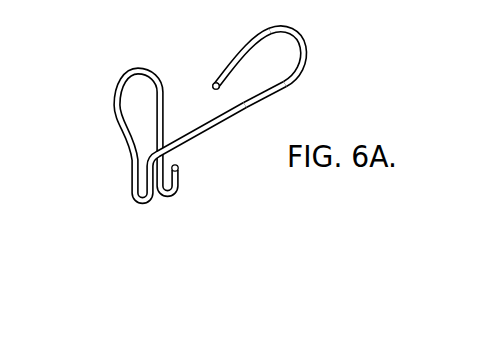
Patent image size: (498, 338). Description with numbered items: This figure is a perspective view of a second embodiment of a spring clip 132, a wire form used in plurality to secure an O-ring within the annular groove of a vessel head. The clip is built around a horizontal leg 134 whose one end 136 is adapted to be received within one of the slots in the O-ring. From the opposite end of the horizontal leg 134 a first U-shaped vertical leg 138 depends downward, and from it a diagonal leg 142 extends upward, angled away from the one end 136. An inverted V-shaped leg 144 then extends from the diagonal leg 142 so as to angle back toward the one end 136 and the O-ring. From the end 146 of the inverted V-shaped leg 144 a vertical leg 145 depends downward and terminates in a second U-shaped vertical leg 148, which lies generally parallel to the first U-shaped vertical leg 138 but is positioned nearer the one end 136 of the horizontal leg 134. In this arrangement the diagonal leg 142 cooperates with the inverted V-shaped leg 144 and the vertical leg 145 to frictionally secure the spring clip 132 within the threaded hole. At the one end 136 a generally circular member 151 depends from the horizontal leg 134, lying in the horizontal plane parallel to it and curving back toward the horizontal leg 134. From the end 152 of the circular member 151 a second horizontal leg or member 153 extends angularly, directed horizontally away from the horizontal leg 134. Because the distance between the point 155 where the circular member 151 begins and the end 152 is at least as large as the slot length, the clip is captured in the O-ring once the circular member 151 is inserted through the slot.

The spring clip 132 is at (210, 109).
The horizontal leg 134 is at (204, 137).
The one end of the horizontal leg 136 is at (263, 50).
The first U-shaped vertical leg 138 is at (132, 200).
The diagonal leg 142 is at (122, 129).
The inverted V-shaped leg 144 is at (124, 84).
The vertical leg 145 is at (210, 88).
The end of the inverted V-shaped leg 146 is at (163, 85).
The second U-shaped vertical leg 148 is at (178, 184).
The circular member 151 is at (309, 53).
The end of the circular member 152 is at (231, 61).
The second horizontal leg or member 153 is at (213, 85).
The point where the circular member begins 155 is at (262, 95).